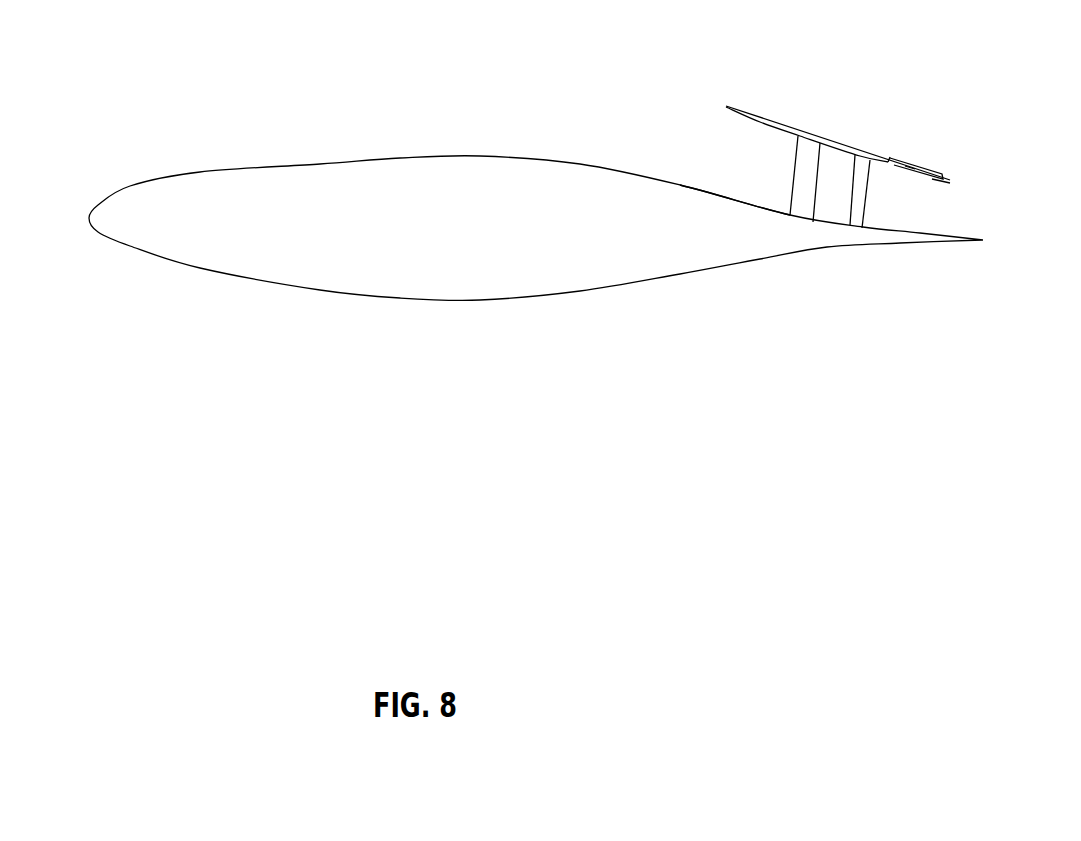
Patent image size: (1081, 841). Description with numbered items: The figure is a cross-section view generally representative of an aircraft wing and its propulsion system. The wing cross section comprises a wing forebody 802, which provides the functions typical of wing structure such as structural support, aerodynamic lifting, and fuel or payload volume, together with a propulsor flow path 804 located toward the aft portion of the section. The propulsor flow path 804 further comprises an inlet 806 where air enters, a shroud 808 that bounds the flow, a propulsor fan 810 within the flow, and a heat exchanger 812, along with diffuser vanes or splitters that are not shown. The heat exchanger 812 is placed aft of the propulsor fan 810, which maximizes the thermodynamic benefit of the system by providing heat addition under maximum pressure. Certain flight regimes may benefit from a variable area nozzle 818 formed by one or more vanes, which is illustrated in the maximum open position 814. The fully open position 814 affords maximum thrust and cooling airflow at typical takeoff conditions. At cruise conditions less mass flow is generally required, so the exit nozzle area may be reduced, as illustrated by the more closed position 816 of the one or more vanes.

The wing forebody 802 is at (320, 182).
The propulsor flow path 804 is at (676, 125).
The inlet 806 is at (720, 158).
The shroud 808 is at (772, 117).
The propulsor fan 810 is at (813, 152).
The heat exchanger 812 is at (845, 217).
The maximum open position 814 is at (943, 170).
The more closed position 816 is at (937, 188).
The variable area nozzle 818 is at (950, 217).